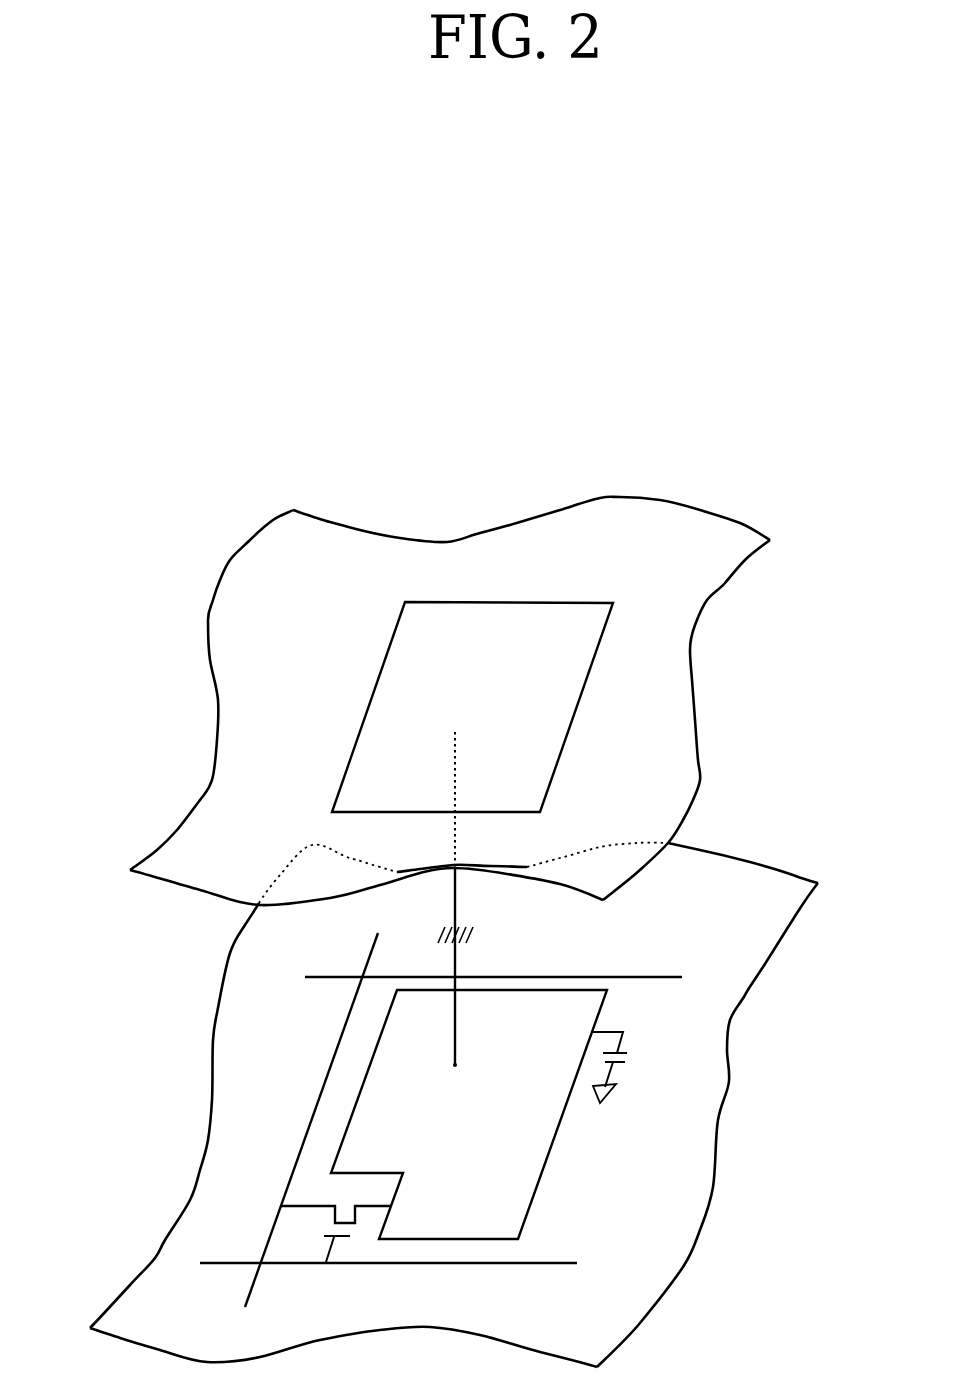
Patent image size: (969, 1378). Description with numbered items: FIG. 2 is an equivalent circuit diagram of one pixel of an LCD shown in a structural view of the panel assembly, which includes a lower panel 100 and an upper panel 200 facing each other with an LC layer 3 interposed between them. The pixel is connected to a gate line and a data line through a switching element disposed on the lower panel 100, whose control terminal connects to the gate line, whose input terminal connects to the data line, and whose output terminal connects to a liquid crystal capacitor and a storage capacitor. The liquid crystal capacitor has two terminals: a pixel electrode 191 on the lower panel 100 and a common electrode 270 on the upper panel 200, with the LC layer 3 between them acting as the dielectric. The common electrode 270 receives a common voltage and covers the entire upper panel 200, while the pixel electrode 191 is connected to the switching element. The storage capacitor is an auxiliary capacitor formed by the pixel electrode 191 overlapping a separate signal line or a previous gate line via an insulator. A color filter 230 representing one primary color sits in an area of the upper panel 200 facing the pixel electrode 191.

The LC layer 3 is at (122, 992).
The lower panel 100 is at (728, 1081).
The pixel electrode 191 is at (548, 1175).
The upper panel 200 is at (703, 733).
The color filter 230 is at (575, 720).
The common electrode 270 is at (695, 668).